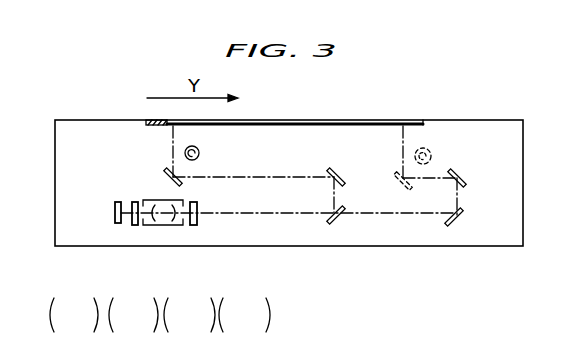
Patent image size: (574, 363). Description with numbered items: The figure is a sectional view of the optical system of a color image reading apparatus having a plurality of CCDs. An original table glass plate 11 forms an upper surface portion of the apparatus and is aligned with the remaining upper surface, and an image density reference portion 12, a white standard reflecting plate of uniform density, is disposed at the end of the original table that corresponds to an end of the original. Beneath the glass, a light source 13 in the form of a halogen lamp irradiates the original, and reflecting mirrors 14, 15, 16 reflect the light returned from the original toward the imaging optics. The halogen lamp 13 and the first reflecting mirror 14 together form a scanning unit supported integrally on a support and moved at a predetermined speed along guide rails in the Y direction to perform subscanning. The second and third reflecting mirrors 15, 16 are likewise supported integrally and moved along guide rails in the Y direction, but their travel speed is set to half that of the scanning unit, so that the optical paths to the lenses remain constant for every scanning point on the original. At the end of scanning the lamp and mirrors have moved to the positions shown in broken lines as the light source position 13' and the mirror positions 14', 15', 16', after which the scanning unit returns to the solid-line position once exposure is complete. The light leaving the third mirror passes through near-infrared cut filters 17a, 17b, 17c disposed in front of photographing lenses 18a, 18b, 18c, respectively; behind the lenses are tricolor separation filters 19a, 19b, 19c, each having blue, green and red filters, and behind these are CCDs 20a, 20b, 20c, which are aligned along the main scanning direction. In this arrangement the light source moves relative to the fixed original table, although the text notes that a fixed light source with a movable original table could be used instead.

The original table glass plate 11 is at (317, 121).
The image density reference portion 12 is at (150, 125).
The light source 13 is at (215, 153).
The first reflecting mirror 14 is at (151, 178).
The second reflecting mirror 15 is at (347, 165).
The third reflecting mirror 16 is at (350, 225).
The light source end-of-scan position 13' is at (441, 147).
The first reflecting mirror end-of-scan position 14' is at (384, 181).
The second reflecting mirror end-of-scan position 15' is at (471, 166).
The third reflecting mirror end-of-scan position 16' is at (474, 214).
The near-infrared cut filter 17a is at (193, 226).
The near-infrared cut filter 17b is at (244, 306).
The near-infrared cut filter 17c is at (244, 325).
The photographing lens 18a is at (172, 226).
The photographing lens 18b is at (189, 306).
The photographing lens 18c is at (189, 325).
The tricolor separation filter 19a is at (137, 226).
The tricolor separation filter 19b is at (134, 306).
The tricolor separation filter 19c is at (134, 325).
The CCD 20a is at (117, 224).
The CCD 20b is at (75, 306).
The CCD 20c is at (75, 325).